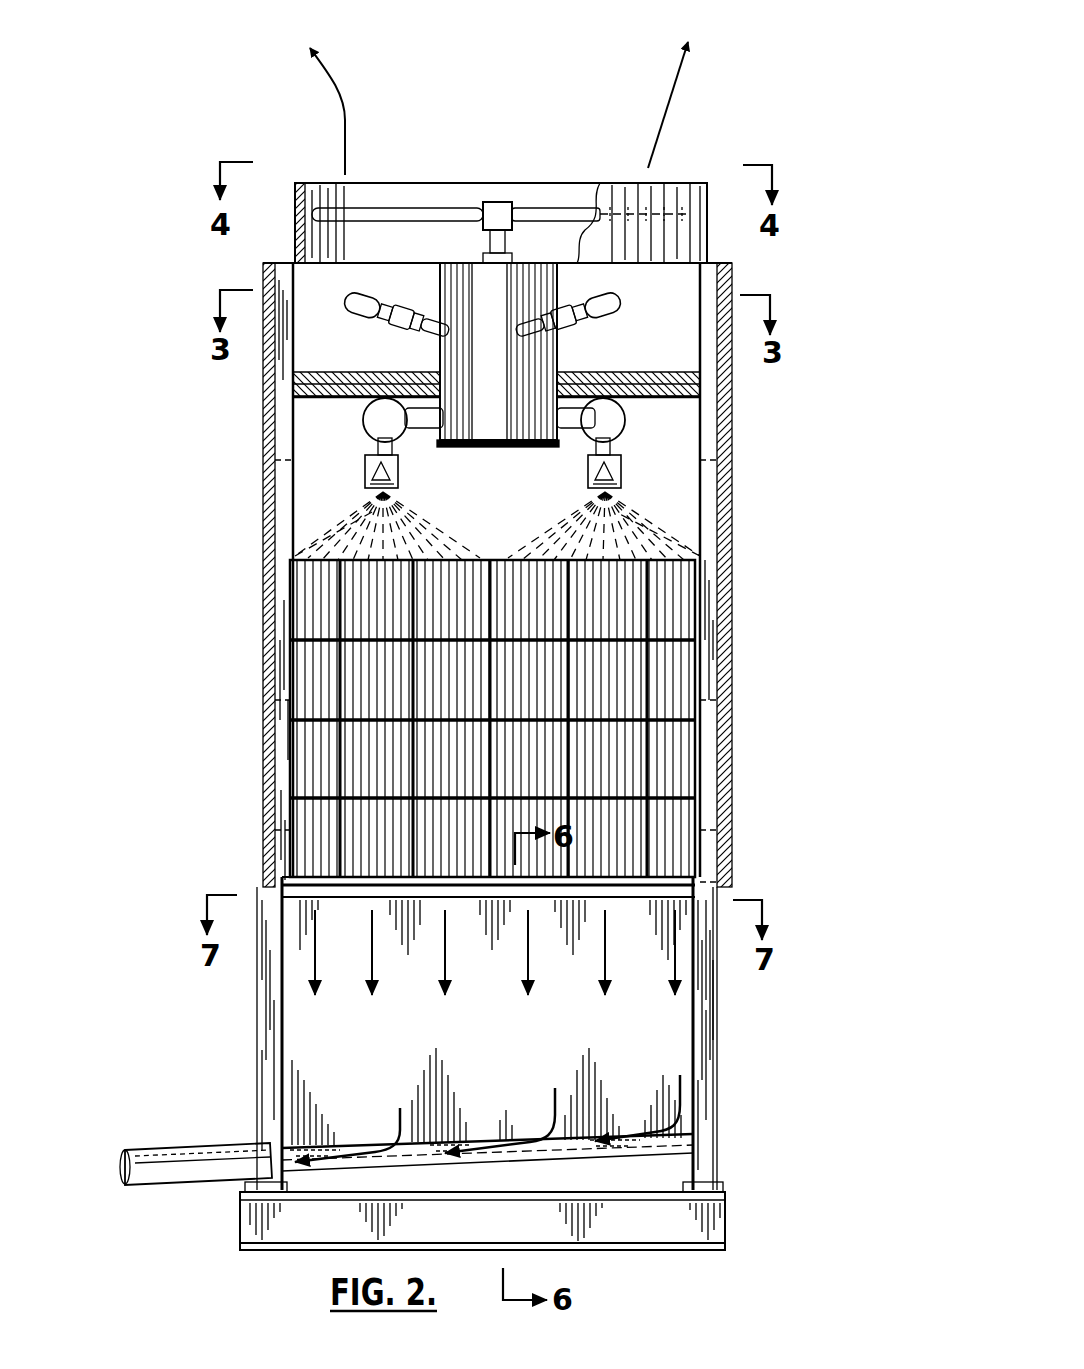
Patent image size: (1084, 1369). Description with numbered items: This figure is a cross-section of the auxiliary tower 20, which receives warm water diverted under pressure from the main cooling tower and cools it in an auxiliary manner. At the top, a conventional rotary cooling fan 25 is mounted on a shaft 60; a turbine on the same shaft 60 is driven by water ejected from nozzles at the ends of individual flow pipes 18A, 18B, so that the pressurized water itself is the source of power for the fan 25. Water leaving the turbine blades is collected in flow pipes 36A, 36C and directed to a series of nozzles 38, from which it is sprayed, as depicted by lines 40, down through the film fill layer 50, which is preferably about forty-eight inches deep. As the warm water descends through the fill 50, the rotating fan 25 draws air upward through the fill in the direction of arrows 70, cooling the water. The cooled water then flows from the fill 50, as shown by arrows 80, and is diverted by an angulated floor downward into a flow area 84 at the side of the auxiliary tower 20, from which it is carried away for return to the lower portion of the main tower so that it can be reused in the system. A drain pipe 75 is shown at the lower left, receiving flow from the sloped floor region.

The auxiliary cooling tower 20 is at (756, 518).
The rotary cooling fan 25 is at (400, 216).
The shaft 60 is at (508, 248).
The arrows indicating air flow direction 70 is at (332, 118).
The flow pipe 18A is at (370, 322).
The flow pipe 18B is at (578, 312).
The flow pipe 36A is at (690, 388).
The flow pipe 36C is at (430, 405).
The nozzles 38 is at (370, 470).
The lines depicting water flow 40 is at (372, 528).
The film fill layer 50 is at (312, 676).
The arrows indicating water flow 80 is at (315, 958).
The flow area 84 is at (698, 1132).
The drain pipe 75 is at (188, 1170).